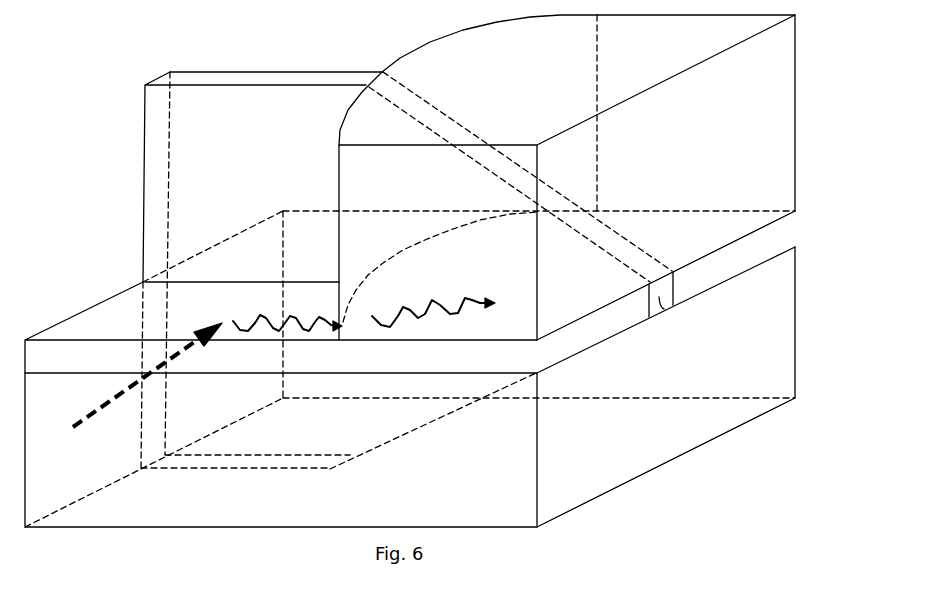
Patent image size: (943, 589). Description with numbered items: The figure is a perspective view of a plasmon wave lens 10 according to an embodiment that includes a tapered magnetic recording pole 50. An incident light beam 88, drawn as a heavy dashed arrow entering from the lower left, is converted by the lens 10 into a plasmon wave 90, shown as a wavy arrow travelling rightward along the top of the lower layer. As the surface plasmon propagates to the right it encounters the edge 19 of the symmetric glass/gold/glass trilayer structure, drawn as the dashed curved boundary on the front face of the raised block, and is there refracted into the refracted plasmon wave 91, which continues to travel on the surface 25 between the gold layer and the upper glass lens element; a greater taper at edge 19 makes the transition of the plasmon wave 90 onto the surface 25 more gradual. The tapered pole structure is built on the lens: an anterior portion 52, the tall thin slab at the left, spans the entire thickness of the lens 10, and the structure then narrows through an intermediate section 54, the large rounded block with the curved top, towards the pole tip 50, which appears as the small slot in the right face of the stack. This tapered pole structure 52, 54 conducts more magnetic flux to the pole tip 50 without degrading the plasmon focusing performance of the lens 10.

The plasmon lens 10 is at (697, 449).
The edge 19 is at (442, 235).
The surface 25 is at (660, 227).
The tapered recording pole 50 is at (660, 297).
The anterior portion 52 is at (150, 141).
The intermediate section 54 is at (472, 145).
The incident light beam 88 is at (118, 402).
The plasmon wave 90 is at (295, 320).
The refracted plasmon wave 91 is at (432, 300).